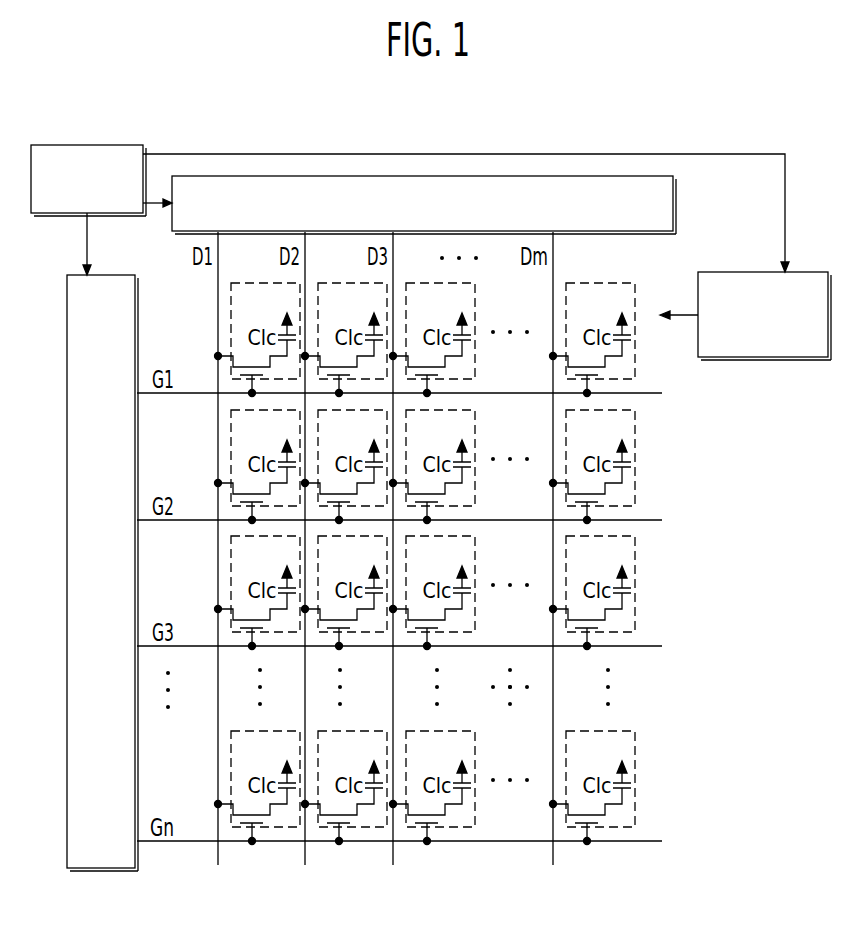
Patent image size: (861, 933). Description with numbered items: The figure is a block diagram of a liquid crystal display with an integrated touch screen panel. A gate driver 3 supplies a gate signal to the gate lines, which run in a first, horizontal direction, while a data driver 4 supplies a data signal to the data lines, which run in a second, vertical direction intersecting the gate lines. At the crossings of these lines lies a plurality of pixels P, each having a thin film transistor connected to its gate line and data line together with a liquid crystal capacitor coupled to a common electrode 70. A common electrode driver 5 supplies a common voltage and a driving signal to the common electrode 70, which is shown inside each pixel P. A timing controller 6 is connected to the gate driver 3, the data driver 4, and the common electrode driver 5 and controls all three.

The gate driver 3 is at (100, 871).
The data driver 4 is at (676, 200).
The common electrode driver 5 is at (762, 360).
The timing controller 6 is at (90, 145).
The common electrode 70 is at (425, 564).
The pixel P is at (637, 778).